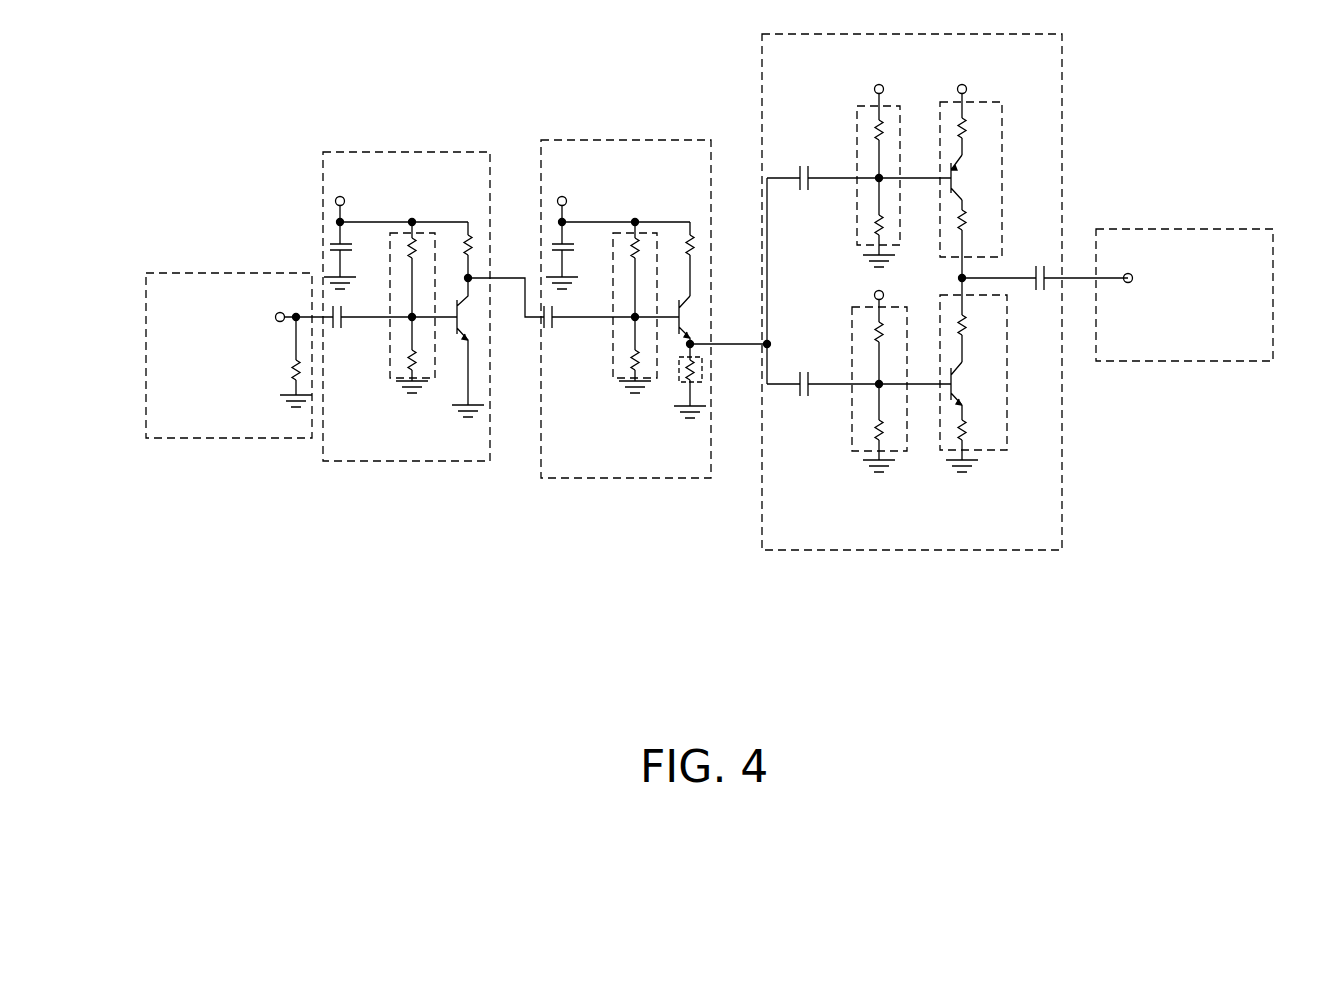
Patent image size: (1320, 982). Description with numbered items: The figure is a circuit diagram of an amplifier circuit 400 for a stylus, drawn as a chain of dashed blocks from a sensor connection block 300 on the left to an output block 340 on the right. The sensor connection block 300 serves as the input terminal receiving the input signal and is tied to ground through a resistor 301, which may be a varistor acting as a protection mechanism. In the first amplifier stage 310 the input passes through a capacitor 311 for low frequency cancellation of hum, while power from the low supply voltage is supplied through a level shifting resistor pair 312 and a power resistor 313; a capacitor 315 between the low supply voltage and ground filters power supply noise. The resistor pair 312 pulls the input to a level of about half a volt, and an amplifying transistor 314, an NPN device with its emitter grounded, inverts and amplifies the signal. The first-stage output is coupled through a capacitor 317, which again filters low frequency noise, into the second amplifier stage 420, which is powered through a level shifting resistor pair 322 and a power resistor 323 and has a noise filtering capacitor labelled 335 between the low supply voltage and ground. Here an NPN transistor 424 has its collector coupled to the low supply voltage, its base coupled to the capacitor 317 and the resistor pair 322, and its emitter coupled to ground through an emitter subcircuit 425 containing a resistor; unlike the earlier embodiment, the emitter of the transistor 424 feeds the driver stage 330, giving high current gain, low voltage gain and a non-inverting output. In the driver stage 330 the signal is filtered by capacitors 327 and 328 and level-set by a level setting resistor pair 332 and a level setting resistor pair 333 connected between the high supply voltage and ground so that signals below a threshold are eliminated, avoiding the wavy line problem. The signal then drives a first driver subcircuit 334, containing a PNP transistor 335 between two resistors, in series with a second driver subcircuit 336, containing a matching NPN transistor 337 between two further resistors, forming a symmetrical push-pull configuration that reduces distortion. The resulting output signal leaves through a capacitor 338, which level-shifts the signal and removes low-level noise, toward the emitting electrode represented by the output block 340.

The sensor connection block 300 is at (250, 440).
The resistor 301 is at (292, 372).
The first amplifier stage 310 is at (410, 463).
The capacitor 311 is at (341, 330).
The level shifting resistor pair 312 is at (389, 358).
The power resistor 313 is at (473, 246).
The amplifying transistor 314 is at (470, 320).
The capacitor 315 is at (354, 248).
The capacitor 317 is at (552, 330).
The level shifting resistor pair 322 is at (612, 358).
The power resistor 323 is at (695, 246).
The PNP transistor 335 is at (958, 180).
The second amplifier stage 420 is at (632, 480).
The NPN transistor 424 is at (686, 318).
The emitter subcircuit 425 is at (703, 372).
The driver stage 330 is at (910, 552).
The capacitor 327 is at (805, 192).
The capacitor 328 is at (805, 370).
The level setting resistor pair 332 is at (857, 160).
The level setting resistor pair 333 is at (852, 332).
The first driver subcircuit 334 is at (1002, 125).
The second driver subcircuit 336 is at (1007, 432).
The NPN transistor 337 is at (958, 385).
The capacitor 338 is at (1040, 264).
The signal output block 340 is at (1170, 363).
The amplifier circuit 400 is at (1122, 609).